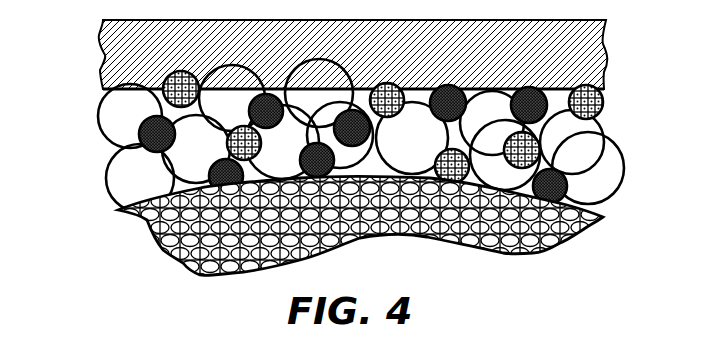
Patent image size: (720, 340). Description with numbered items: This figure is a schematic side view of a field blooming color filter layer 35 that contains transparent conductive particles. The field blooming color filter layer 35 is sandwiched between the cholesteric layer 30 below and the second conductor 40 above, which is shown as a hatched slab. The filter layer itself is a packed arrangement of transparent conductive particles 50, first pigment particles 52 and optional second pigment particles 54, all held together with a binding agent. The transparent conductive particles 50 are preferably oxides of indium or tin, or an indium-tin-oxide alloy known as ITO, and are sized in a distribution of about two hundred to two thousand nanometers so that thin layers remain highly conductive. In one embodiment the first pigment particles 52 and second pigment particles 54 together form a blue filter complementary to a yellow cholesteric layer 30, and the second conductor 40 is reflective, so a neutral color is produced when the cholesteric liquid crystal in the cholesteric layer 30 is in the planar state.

The cholesteric layer 30 is at (154, 250).
The field blooming color filter layer 35 is at (92, 90).
The second conductor 40 is at (102, 56).
The transparent conductive particles 50 is at (610, 157).
The first pigment particles 52 is at (568, 197).
The second pigment particles 54 is at (607, 93).